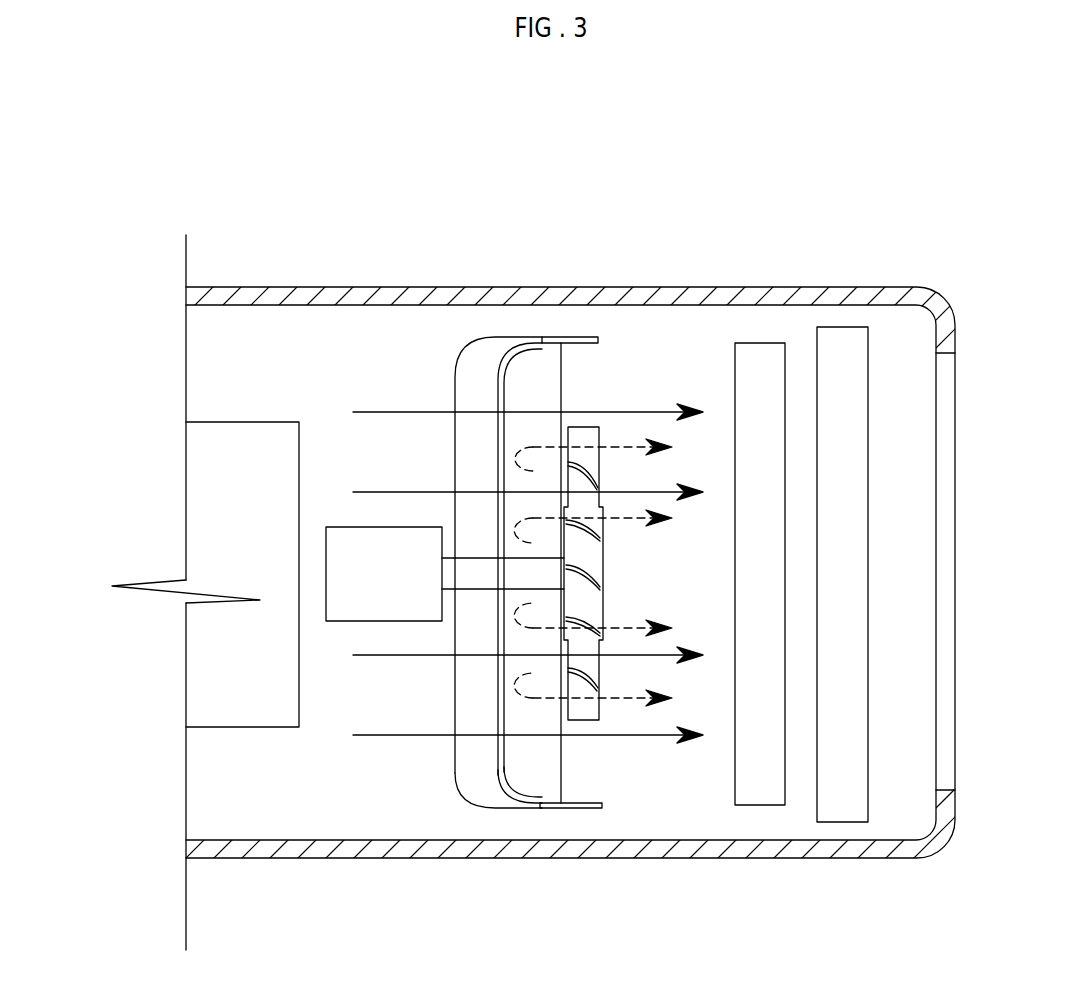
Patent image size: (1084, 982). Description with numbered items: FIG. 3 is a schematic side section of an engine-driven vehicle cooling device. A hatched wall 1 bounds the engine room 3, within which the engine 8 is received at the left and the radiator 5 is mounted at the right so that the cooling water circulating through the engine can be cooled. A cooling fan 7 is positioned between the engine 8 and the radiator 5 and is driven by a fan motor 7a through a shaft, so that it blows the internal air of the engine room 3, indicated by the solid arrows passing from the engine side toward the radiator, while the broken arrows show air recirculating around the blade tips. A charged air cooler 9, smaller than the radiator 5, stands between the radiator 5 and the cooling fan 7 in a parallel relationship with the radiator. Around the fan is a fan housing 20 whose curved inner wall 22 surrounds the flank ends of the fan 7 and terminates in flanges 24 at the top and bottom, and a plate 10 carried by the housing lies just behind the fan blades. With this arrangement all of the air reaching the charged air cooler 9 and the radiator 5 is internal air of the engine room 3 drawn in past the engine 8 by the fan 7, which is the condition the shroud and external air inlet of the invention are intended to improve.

The vehicle body casing 1 is at (675, 300).
The engine room 3 is at (352, 360).
The condenser 5 is at (843, 343).
The cooling fan 7 is at (583, 435).
The fan motor 7a is at (410, 560).
The engine 8 is at (220, 687).
The radiator 9 is at (757, 355).
The fan shroud plate 10 is at (550, 768).
The fan housing 20 is at (452, 795).
The inner guide wall 22 is at (478, 698).
The flange 24 is at (543, 340).